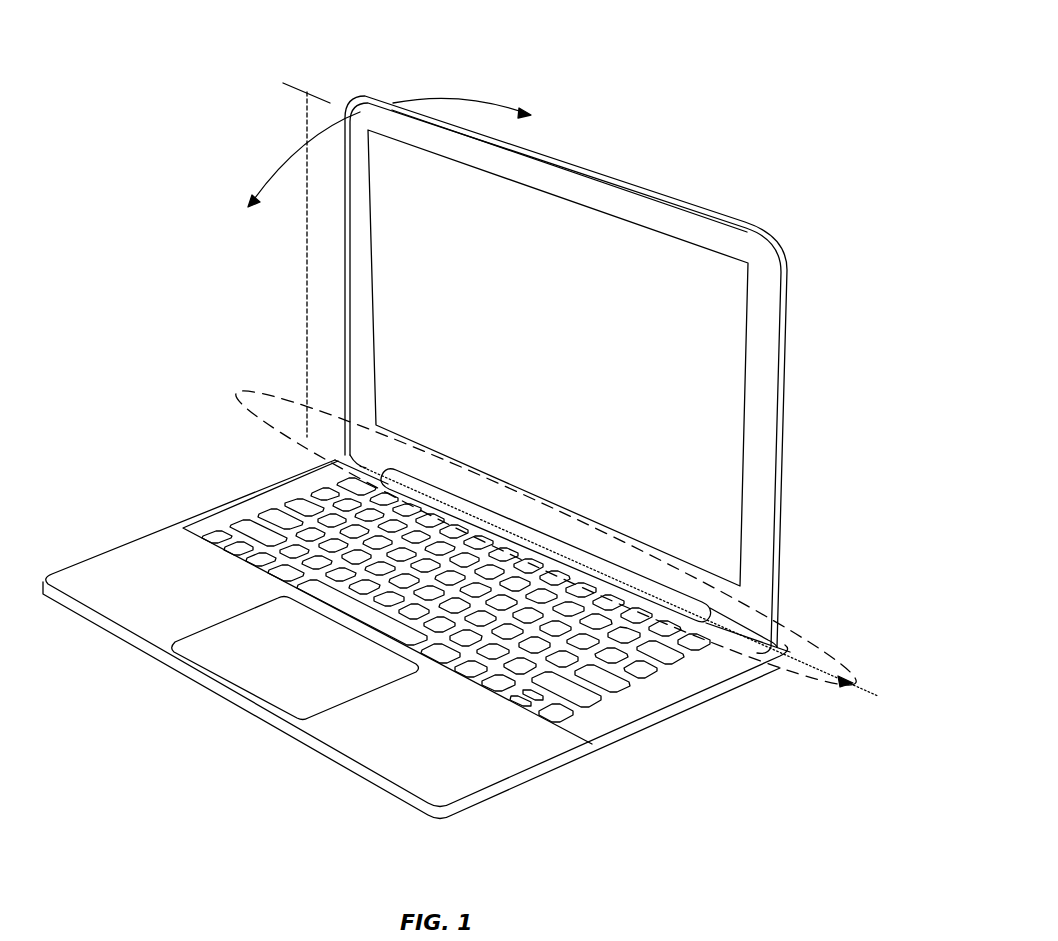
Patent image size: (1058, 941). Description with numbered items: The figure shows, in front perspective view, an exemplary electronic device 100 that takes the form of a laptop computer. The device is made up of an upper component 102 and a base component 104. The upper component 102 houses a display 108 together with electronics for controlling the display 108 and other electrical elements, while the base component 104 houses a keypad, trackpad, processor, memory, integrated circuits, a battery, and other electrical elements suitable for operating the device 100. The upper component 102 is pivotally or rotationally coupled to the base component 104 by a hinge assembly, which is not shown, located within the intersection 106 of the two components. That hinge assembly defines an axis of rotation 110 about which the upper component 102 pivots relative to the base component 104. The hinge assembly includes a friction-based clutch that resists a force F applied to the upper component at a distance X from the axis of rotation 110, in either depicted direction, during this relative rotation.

The electronic device 100 is at (682, 46).
The upper component 102 is at (790, 395).
The base component 104 is at (630, 722).
The intersection 106 is at (832, 642).
The display 108 is at (558, 358).
The axis of rotation 110 is at (780, 650).